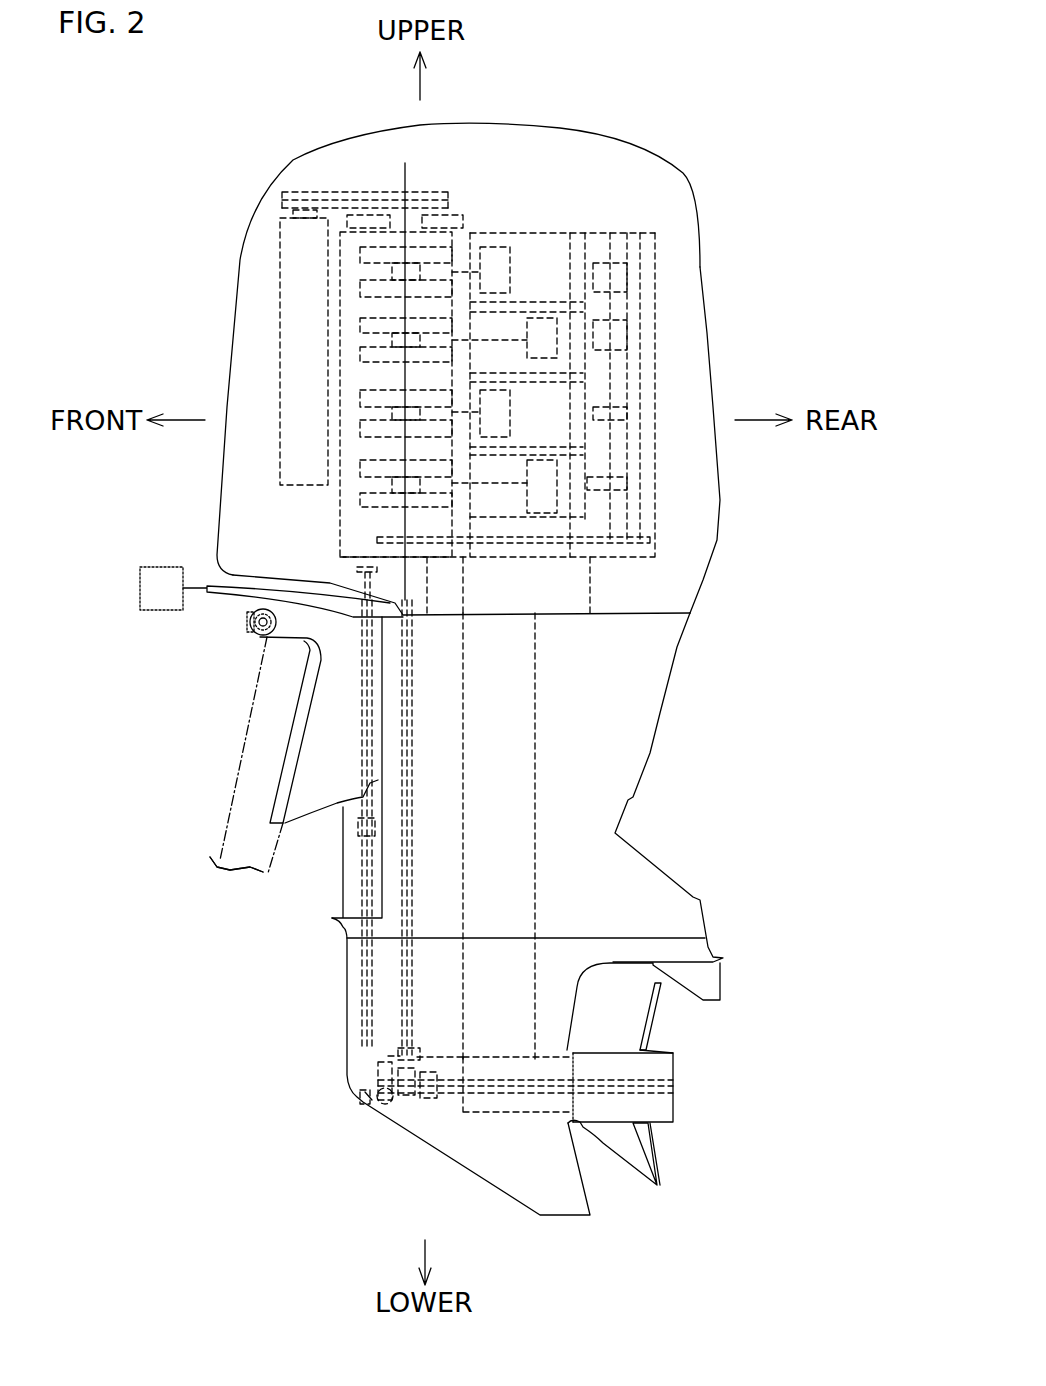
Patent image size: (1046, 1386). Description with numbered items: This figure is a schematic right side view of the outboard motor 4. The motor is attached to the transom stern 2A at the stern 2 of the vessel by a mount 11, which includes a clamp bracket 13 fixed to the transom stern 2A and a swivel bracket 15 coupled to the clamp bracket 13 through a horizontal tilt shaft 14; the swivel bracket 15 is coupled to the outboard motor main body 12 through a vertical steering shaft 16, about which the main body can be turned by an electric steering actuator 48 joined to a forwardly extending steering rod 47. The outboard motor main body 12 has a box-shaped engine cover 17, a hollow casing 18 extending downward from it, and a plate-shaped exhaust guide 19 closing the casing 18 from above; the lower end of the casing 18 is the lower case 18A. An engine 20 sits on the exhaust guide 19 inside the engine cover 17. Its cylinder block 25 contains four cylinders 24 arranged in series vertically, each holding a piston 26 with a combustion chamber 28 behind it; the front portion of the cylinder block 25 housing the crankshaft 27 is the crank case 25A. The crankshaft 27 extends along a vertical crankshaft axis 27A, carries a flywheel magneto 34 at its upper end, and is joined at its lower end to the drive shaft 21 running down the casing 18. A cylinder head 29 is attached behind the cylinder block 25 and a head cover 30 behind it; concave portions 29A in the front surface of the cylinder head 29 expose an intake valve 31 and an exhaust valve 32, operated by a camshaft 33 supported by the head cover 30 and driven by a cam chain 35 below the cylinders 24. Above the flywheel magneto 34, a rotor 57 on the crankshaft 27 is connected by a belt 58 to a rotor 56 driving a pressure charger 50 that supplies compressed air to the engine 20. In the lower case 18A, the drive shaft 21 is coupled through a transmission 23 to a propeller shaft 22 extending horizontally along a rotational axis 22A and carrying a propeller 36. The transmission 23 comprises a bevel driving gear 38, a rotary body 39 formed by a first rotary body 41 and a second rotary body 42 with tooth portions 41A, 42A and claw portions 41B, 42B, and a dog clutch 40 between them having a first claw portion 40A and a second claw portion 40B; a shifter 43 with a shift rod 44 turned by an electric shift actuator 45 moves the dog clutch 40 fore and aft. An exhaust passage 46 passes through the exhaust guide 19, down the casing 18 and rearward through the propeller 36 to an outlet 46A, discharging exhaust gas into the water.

The hull 2 is at (201, 842).
The transom stern 2A is at (228, 808).
The outboard motor 4 is at (655, 108).
The mount 11 is at (288, 880).
The outboard motor main body 12 is at (219, 377).
The clamp bracket 13 is at (330, 730).
The tilt shaft 14 is at (250, 624).
The swivel bracket 15 is at (343, 880).
The steering shaft 16 is at (360, 827).
The engine cover 17 is at (718, 466).
The casing 18 is at (655, 745).
The lower case 18A is at (347, 1003).
The exhaust guide 19 is at (592, 574).
The engine 20 is at (660, 239).
The drive shaft 21 is at (412, 764).
The propeller shaft 22 is at (520, 1094).
The rotational axis 22A is at (673, 1085).
The transmission 23 is at (360, 1105).
The cylinder 24 is at (510, 265).
The cylinder block 25 is at (475, 233).
The crank case 25A is at (340, 522).
The piston 26 is at (537, 232).
The crankshaft 27 is at (365, 283).
The crankshaft axis 27A is at (405, 168).
The combustion chamber 28 is at (563, 233).
The cylinder head 29 is at (590, 233).
The concave portion 29A is at (640, 320).
The head cover 30 is at (635, 233).
The intake valve 31 is at (607, 473).
The exhaust valve 32 is at (717, 422).
The camshaft 33 is at (640, 276).
The flywheel magneto 34 is at (455, 195).
The cam chain 35 is at (655, 540).
The propeller 36 is at (636, 1167).
The driving gear 38 is at (420, 1050).
The rotary body 39 is at (433, 1205).
The dog clutch 40 is at (380, 1103).
The first claw portion 40A is at (370, 1096).
The second claw portion 40B is at (440, 1066).
The first rotary body 41 is at (385, 1100).
The tooth portion 41A is at (390, 1058).
The claw portion 41B is at (417, 1055).
The second rotary body 42 is at (420, 1100).
The tooth portion 42A is at (435, 1052).
The claw portion 42B is at (440, 1102).
The shifter 43 is at (281, 825).
The shift rod 44 is at (347, 982).
The shift actuator 45 is at (355, 568).
The exhaust passage 46 is at (535, 716).
The outlet 46A is at (678, 1060).
The steering rod 47 is at (213, 577).
The steering actuator 48 is at (140, 590).
The pressure charger 50 is at (280, 323).
The rotor 56 is at (293, 192).
The rotor 57 is at (370, 192).
The belt 58 is at (337, 192).